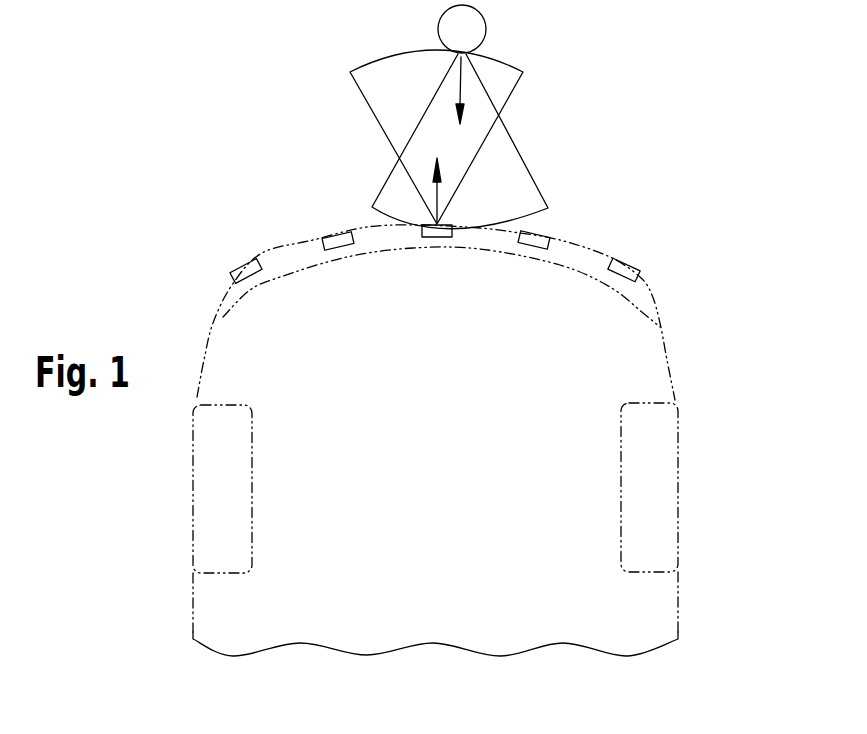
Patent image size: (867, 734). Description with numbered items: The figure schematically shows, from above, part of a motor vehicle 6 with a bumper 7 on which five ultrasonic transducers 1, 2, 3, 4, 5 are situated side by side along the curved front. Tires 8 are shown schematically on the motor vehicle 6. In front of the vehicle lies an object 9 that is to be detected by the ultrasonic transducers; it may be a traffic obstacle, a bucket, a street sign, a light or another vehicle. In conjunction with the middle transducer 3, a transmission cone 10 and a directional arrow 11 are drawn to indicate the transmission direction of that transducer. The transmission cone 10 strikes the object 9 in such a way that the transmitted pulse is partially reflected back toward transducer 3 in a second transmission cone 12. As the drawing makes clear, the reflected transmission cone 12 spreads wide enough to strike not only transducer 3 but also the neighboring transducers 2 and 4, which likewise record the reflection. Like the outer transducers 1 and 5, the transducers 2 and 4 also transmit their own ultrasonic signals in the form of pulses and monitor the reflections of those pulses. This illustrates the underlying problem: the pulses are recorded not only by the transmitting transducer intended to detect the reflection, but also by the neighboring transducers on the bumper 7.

The ultrasonic transducer 1 is at (244, 264).
The ultrasonic transducer 2 is at (334, 240).
The ultrasonic transducer 3 is at (422, 232).
The ultrasonic transducer 4 is at (533, 234).
The ultrasonic transducer 5 is at (631, 263).
The motor vehicle 6 is at (587, 368).
The bumper 7 is at (648, 287).
The tires 8 is at (648, 488).
The object 9 is at (466, 31).
The transmission cone 10 is at (368, 107).
The directional arrow 11 is at (437, 197).
The second transmission cone 12 is at (517, 145).